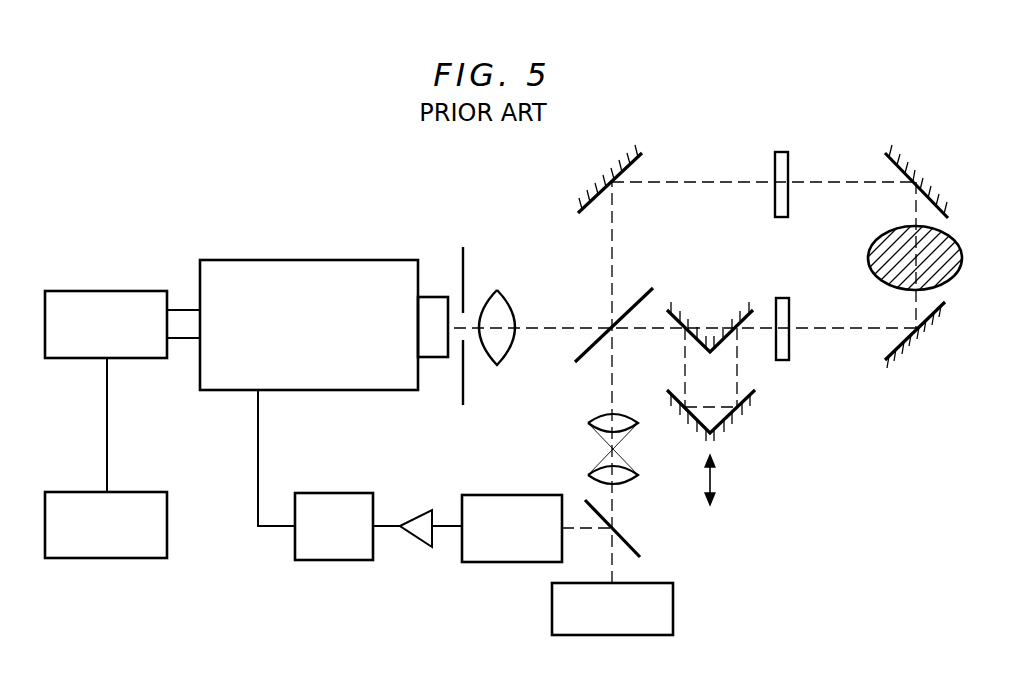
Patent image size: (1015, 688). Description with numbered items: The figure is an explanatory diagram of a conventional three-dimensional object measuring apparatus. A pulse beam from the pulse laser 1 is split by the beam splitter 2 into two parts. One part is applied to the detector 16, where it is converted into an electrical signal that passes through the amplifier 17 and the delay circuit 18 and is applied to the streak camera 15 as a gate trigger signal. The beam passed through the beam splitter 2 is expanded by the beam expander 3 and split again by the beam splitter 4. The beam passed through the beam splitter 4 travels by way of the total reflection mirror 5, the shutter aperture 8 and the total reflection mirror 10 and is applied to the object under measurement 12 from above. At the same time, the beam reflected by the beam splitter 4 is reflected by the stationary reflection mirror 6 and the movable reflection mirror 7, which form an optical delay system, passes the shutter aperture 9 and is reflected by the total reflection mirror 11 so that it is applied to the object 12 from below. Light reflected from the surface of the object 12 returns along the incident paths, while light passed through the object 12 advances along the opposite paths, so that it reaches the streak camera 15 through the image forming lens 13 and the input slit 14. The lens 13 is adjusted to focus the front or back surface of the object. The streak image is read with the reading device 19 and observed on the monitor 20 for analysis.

The pulse laser 1 is at (674, 612).
The beam splitter 2 is at (636, 546).
The beam expander 3 is at (638, 458).
The beam splitter 4 is at (578, 362).
The total reflection mirror 5 is at (640, 152).
The stationary reflection mirror 6 is at (674, 310).
The movable reflection mirror 7 is at (752, 396).
The shutter aperture 8 is at (780, 152).
The shutter aperture 9 is at (785, 298).
The total reflection mirror 10 is at (886, 153).
The total reflection mirror 11 is at (890, 362).
The object under measurement 12 is at (962, 260).
The image forming lens 13 is at (510, 292).
The input slit 14 is at (467, 258).
The streak camera 15 is at (362, 260).
The detector 16 is at (514, 495).
The amplifier 17 is at (410, 513).
The delay circuit 18 is at (328, 493).
The reading device 19 is at (118, 291).
The monitor 20 is at (125, 492).